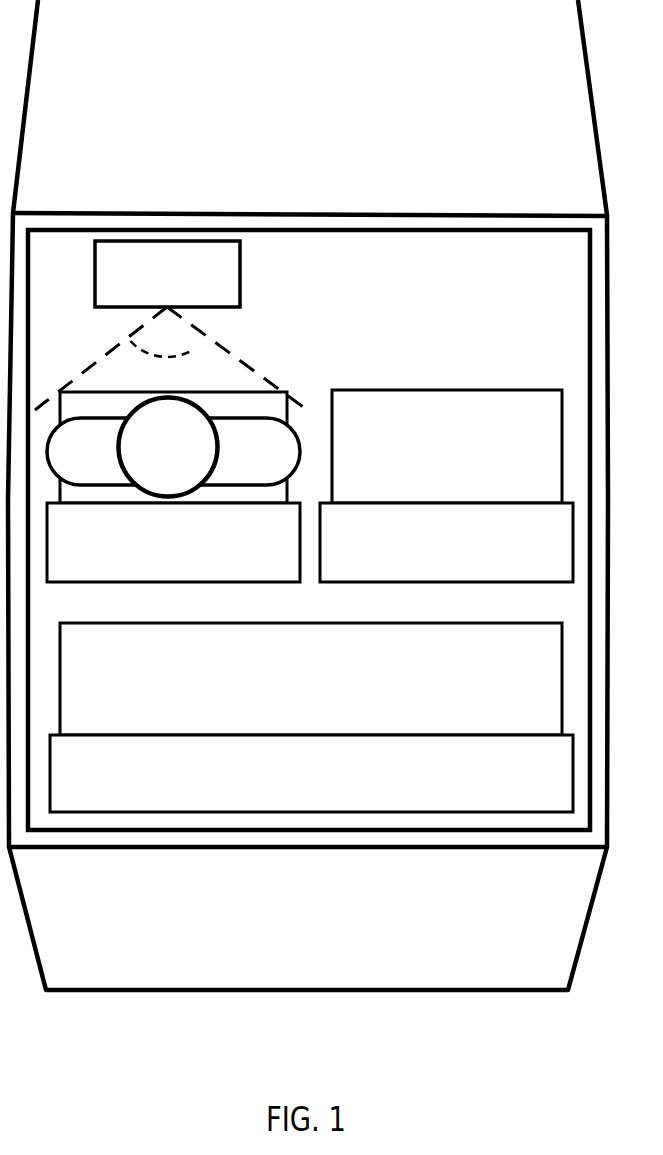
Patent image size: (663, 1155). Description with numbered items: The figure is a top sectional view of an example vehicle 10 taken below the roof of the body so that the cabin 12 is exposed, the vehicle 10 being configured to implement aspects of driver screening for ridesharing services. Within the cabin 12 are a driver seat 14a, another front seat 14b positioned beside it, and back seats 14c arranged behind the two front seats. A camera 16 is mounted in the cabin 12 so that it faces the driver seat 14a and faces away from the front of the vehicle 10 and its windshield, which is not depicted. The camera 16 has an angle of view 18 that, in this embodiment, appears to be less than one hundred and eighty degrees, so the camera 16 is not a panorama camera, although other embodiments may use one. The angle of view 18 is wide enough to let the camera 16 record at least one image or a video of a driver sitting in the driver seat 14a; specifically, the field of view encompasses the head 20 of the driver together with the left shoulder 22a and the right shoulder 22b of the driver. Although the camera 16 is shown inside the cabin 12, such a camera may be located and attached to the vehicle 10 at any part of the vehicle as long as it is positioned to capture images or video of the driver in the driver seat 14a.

The vehicle 10 is at (297, 58).
The cabin 12 is at (299, 296).
The driver seat 14a is at (158, 565).
The front seat 14b is at (430, 565).
The back seats 14c is at (294, 796).
The camera 16 is at (156, 298).
The angle of view 18 is at (192, 350).
The head 20 is at (157, 470).
The left shoulder 22a is at (75, 459).
The right shoulder 22b is at (235, 459).